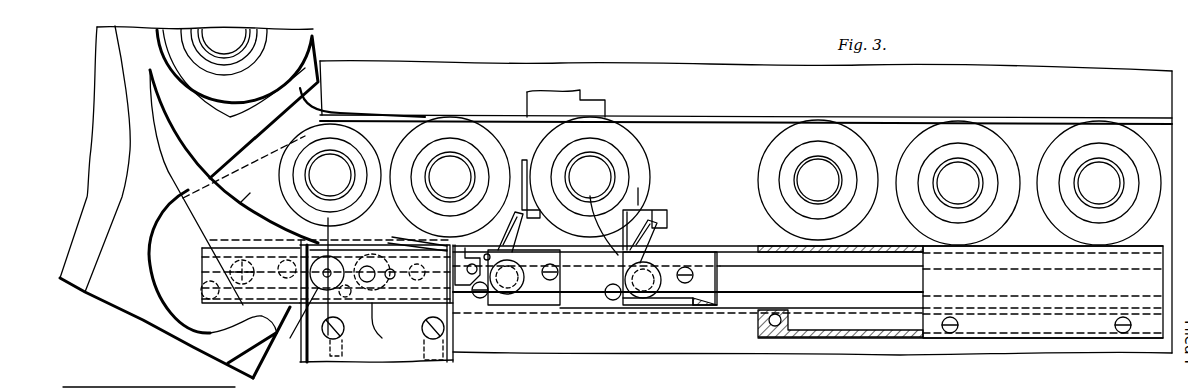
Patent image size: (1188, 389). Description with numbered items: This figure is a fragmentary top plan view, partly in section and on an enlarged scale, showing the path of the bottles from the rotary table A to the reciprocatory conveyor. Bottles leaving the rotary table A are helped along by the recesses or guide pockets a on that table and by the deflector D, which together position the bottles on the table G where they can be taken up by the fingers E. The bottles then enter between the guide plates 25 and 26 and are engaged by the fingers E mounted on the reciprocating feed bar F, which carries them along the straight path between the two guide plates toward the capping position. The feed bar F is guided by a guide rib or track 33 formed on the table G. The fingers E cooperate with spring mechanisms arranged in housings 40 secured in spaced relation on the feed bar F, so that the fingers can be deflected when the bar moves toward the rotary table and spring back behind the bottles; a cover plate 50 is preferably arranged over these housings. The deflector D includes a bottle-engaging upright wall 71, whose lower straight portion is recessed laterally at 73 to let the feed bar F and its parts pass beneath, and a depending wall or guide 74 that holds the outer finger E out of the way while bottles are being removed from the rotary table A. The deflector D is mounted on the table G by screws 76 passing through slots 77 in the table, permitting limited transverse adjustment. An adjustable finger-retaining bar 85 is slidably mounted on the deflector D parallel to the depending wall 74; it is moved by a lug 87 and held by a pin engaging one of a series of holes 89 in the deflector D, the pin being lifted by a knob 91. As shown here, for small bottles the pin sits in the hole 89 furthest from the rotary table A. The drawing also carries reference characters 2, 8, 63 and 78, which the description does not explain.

The section line 2- 2 is at (330, 219).
The lever 8 is at (640, 188).
The guide plate 25 is at (725, 246).
The guide plate 26 is at (707, 118).
The guide rib 33 is at (872, 275).
The housing 40 is at (545, 305).
The cover plate 50 is at (1043, 292).
The link 63 is at (600, 216).
The bottle-engaging upright wall 71 is at (209, 259).
The recessed portion 73 is at (376, 303).
The depending wall 74 is at (217, 232).
The screws 76 is at (446, 330).
The slots 77 is at (336, 360).
The lever arm 78 is at (468, 250).
The adjustable finger-retaining bar 85 is at (250, 193).
The lug 87 is at (404, 235).
The holes 89 is at (370, 282).
The knob 91 is at (285, 347).
The rotary table A is at (150, 286).
The deflector D is at (190, 130).
The fingers E is at (257, 242).
The feed bar F is at (582, 318).
The table G is at (728, 333).
The guide pockets a is at (157, 44).